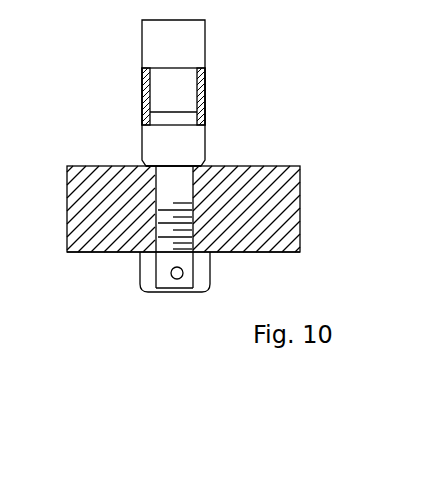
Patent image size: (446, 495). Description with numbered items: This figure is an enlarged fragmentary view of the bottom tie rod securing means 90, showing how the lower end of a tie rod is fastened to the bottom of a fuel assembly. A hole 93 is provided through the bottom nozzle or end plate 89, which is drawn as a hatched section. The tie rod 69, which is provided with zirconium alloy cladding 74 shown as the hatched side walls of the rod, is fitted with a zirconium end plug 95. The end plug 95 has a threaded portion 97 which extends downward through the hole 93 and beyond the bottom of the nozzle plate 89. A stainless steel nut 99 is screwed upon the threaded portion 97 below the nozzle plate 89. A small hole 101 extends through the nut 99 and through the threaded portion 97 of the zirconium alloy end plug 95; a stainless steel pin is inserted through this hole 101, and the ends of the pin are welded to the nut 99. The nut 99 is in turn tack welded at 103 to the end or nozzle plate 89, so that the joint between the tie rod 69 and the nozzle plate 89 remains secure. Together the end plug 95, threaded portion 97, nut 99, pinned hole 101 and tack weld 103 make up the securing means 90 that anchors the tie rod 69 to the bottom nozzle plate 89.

The tie rod 69 is at (252, 80).
The zirconium alloy cladding 74 is at (142, 86).
The zirconium end plug 95 is at (197, 141).
The bottom nozzle or end plate 89 is at (101, 167).
The tie rod securing means 90 is at (87, 299).
The hole 93 is at (160, 228).
The threaded portion 97 is at (192, 240).
The stainless steel nut 99 is at (181, 293).
The small hole 101 is at (173, 278).
The tack weld 103 is at (212, 256).